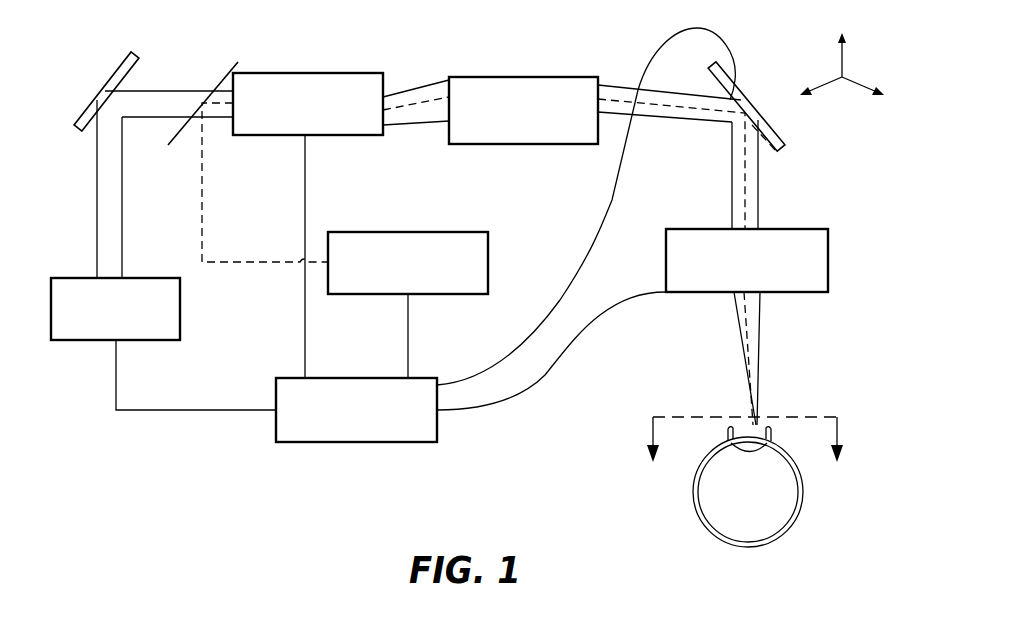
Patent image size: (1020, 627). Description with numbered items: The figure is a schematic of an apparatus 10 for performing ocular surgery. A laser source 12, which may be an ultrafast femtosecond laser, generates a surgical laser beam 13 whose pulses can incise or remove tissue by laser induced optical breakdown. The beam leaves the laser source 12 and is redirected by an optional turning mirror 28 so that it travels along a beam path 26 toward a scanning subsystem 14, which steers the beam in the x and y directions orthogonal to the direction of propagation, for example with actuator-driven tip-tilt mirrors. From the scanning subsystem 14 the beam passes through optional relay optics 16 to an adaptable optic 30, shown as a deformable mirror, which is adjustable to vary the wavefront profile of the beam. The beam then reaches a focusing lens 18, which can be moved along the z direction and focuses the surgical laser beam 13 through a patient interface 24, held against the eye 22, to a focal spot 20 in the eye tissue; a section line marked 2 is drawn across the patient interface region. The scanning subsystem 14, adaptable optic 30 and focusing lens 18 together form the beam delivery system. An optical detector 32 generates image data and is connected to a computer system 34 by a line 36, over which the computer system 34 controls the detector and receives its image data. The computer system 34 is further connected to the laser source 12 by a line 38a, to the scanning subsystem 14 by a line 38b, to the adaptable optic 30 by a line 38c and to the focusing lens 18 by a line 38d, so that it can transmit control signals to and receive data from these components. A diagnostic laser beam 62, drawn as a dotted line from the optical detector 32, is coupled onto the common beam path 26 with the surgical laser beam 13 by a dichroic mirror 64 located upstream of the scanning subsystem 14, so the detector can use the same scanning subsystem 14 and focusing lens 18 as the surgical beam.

The section line 2- 2 is at (745, 451).
The apparatus for performing ocular surgery 10 is at (309, 62).
The laser source 12 is at (72, 343).
The surgical laser beam 13 is at (123, 177).
The scanning subsystem 14 is at (352, 137).
The relay optics 16 is at (522, 145).
The focusing lens 18 is at (828, 252).
The focal spot 20 is at (772, 433).
The eye 22 is at (767, 530).
The patient interface 24 is at (728, 423).
The beam path 26 is at (100, 178).
The turning mirror 28 is at (97, 100).
The adaptable optic 30 is at (760, 103).
The optical detector 32 is at (488, 270).
The computer system 34 is at (413, 442).
The line 36 is at (408, 332).
The line 38a is at (200, 410).
The line 38b is at (303, 167).
The line 38c is at (657, 50).
The line 38d is at (593, 323).
The diagnostic laser beam 62 is at (265, 265).
The dichroic mirror 64 is at (197, 110).